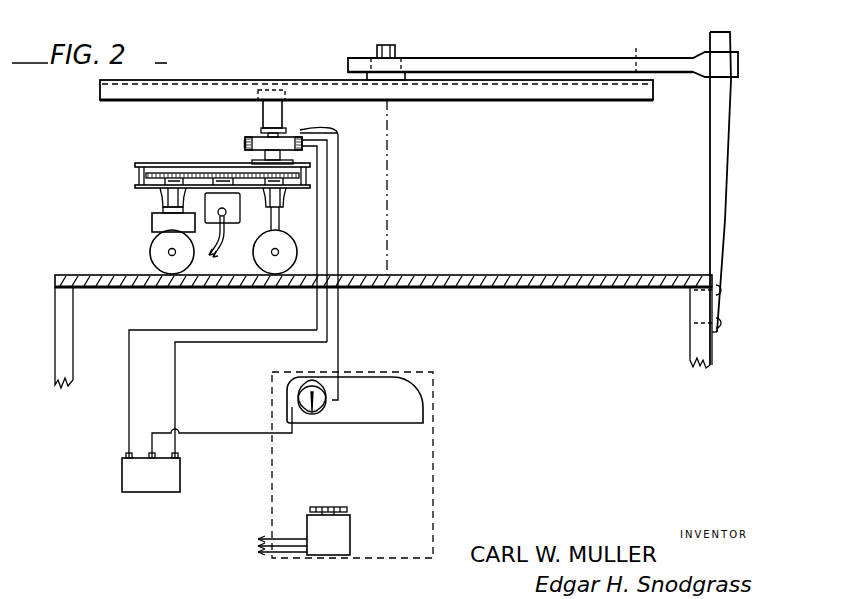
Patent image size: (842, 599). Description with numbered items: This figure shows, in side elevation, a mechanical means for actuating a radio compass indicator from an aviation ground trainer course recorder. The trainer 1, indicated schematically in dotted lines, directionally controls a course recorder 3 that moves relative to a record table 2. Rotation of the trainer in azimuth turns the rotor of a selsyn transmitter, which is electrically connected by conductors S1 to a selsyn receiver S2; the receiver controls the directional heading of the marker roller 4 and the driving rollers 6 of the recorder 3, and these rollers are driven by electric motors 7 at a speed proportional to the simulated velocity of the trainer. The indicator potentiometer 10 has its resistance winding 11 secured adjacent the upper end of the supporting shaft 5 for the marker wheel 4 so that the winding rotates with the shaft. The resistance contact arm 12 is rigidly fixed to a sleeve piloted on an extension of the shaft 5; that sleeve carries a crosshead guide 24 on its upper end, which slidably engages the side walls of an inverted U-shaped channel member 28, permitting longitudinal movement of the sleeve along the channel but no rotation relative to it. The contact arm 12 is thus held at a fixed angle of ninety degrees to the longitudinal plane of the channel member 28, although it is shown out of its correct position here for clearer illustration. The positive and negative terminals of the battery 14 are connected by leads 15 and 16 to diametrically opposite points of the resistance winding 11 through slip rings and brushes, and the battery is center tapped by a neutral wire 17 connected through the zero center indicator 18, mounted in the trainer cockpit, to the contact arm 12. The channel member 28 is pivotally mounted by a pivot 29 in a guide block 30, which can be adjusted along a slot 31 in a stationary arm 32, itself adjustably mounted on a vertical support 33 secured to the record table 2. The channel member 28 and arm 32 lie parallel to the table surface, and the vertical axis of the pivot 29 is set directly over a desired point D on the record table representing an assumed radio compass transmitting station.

The trainer 1 is at (435, 433).
The record table 2 is at (492, 275).
The course recorder 3 is at (288, 194).
The marker roller 4 is at (292, 247).
The supporting shaft 5 is at (282, 223).
The driving rollers 6 is at (152, 255).
The electric motors 7 is at (152, 223).
The potentiometer 10 is at (243, 144).
The resistance winding 11 is at (245, 137).
The contact arm 12 is at (338, 131).
The battery 14 is at (180, 484).
The lead 15 is at (128, 395).
The lead 16 is at (175, 380).
The neutral wire 17 is at (340, 196).
The indicator 18 is at (332, 407).
The crosshead guide 24 is at (284, 104).
The inverted U-shaped channel member 28 is at (251, 80).
The pivot 29 is at (384, 47).
The guide block 30 is at (404, 62).
The slot 31 is at (637, 54).
The arm 32 is at (566, 58).
The vertical support 33 is at (710, 162).
The point on the record table surface D is at (390, 272).
The conductors S1 is at (238, 547).
The selsyn receiver S2 is at (232, 223).